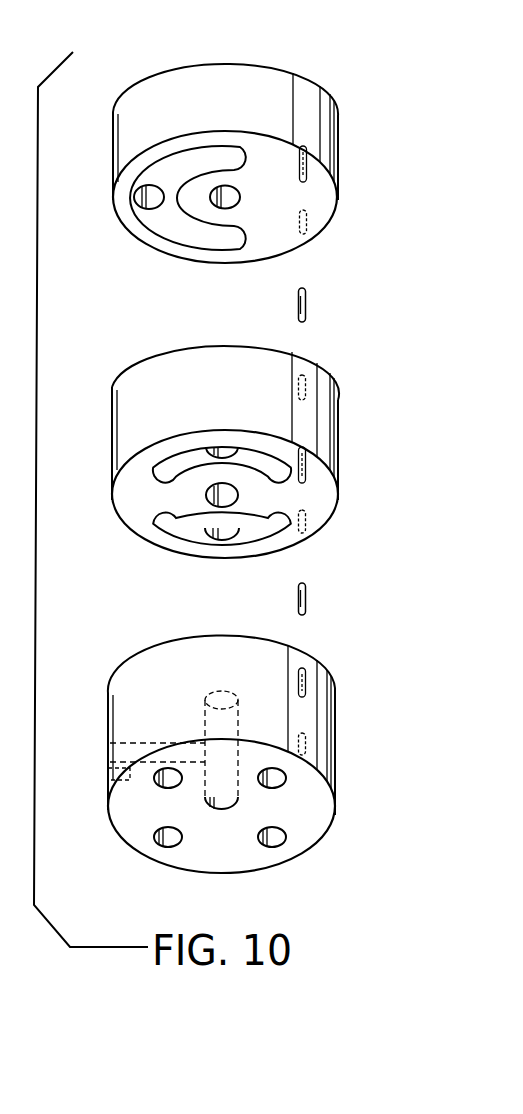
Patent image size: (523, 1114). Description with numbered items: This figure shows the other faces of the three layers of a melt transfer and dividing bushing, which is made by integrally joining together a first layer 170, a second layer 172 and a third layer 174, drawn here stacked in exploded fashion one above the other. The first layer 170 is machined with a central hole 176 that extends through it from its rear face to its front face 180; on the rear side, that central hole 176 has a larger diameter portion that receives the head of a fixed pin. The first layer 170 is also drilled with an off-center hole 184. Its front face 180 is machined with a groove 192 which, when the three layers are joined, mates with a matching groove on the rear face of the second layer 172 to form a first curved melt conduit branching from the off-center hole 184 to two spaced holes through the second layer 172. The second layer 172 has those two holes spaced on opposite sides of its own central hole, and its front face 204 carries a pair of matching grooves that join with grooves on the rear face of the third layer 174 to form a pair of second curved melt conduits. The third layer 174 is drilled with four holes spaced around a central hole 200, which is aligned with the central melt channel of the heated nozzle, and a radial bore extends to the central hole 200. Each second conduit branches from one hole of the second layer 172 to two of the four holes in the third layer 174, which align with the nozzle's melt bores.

The first layer 170 is at (217, 161).
The second layer 172 is at (206, 463).
The third layer 174 is at (208, 753).
The central hole 176 is at (228, 199).
The front face 180 is at (314, 203).
The off-center hole 184 is at (148, 204).
The groove 192 is at (172, 229).
The front face 204 is at (140, 523).
The central hole 200 is at (207, 810).